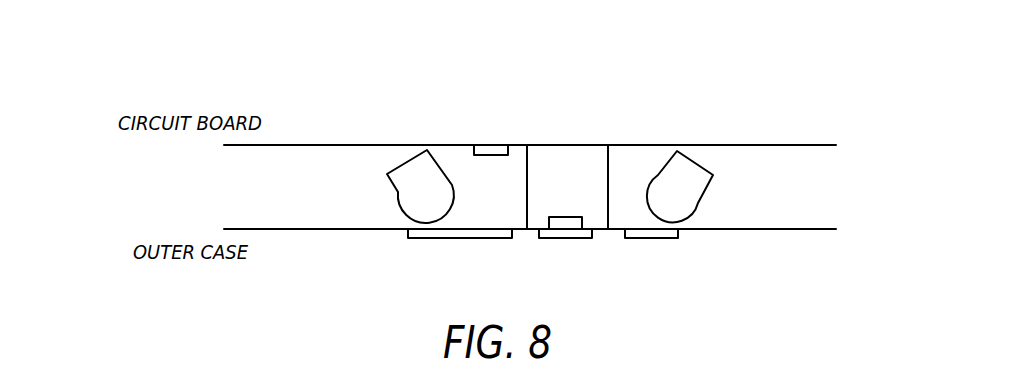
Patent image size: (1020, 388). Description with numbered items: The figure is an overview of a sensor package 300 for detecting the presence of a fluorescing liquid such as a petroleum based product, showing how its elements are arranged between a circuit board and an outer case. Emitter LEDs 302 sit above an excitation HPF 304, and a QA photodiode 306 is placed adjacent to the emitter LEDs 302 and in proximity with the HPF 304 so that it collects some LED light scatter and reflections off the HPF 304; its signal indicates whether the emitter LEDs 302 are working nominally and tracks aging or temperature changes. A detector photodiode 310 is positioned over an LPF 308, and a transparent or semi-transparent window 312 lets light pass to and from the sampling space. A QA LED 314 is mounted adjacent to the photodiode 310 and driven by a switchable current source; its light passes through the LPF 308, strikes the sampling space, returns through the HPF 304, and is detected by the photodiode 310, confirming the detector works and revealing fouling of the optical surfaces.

The sensor assembly 300 is at (640, 56).
The emitter LEDs 302 is at (395, 195).
The HPF 304 is at (462, 238).
The QA photodiode 306 is at (490, 143).
The LPF 308 is at (563, 238).
The photodetector 310 is at (563, 217).
The transparent or semi-transparent window 312 is at (652, 238).
The QA LED 314 is at (702, 197).